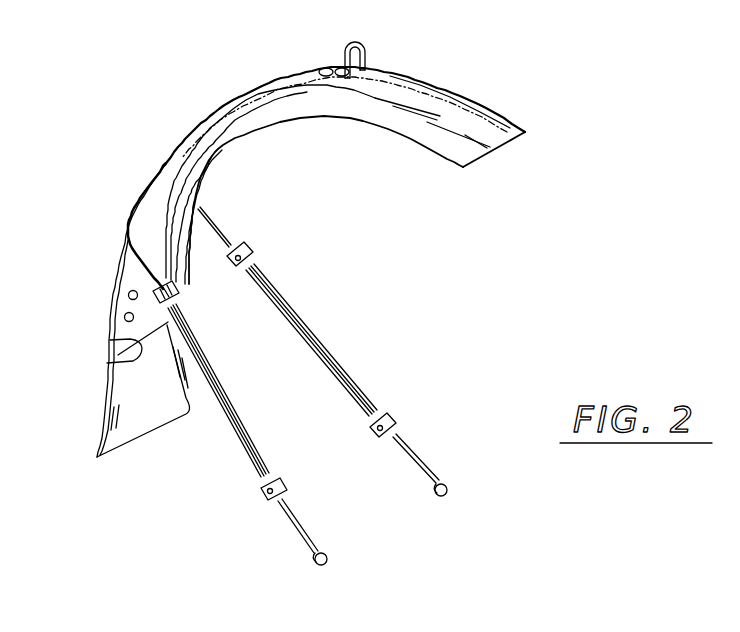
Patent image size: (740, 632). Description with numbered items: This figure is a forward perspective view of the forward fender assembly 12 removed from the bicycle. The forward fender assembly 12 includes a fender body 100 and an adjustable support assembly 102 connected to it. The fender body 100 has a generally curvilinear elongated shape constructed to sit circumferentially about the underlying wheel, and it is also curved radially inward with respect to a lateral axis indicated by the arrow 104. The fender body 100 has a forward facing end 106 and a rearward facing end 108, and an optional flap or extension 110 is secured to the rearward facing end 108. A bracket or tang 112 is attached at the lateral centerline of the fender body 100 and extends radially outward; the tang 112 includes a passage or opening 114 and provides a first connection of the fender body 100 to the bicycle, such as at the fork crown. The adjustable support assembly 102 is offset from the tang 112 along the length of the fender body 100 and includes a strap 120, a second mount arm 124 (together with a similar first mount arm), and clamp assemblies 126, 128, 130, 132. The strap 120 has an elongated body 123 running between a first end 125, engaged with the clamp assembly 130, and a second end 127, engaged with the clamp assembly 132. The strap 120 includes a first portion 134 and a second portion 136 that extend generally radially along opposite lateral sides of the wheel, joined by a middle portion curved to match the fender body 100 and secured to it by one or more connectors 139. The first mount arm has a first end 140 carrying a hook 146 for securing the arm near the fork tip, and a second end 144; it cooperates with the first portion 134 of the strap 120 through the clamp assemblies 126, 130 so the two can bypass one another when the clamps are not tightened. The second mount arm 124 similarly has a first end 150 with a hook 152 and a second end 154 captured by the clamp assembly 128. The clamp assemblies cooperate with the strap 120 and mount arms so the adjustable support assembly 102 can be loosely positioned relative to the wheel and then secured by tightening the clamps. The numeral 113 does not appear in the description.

The forward fender assembly 12 is at (482, 77).
The fender body 100 is at (505, 123).
The adjustable support assembly 102 is at (411, 333).
The arrow indicating lateral axis 104 is at (259, 39).
The forward facing end 106 is at (518, 134).
The rearward facing end 108 is at (110, 363).
The flap or extension 110 is at (106, 398).
The bracket or tang 112 is at (354, 42).
The outer edge 113 is at (121, 212).
The passage or opening 114 is at (367, 49).
The strap 120 is at (217, 224).
The elongated body 123 is at (130, 248).
The second mount arm 124 is at (418, 450).
The first end of strap 125 is at (263, 478).
The clamp assembly 126 is at (157, 304).
The second end of strap 127 is at (368, 413).
The clamp assembly 128 is at (253, 247).
The clamp assembly 130 is at (272, 500).
The clamp assembly 132 is at (390, 418).
The first portion of strap 134 is at (228, 443).
The second portion of strap 136 is at (336, 334).
The connectors 139 is at (174, 194).
The first end of first mount arm 140 is at (336, 553).
The second end of first mount arm 144 is at (111, 312).
The hook 146 is at (311, 572).
The first end of second mount arm 150 is at (454, 480).
The hook 152 is at (440, 501).
The second end of second mount arm 154 is at (262, 253).